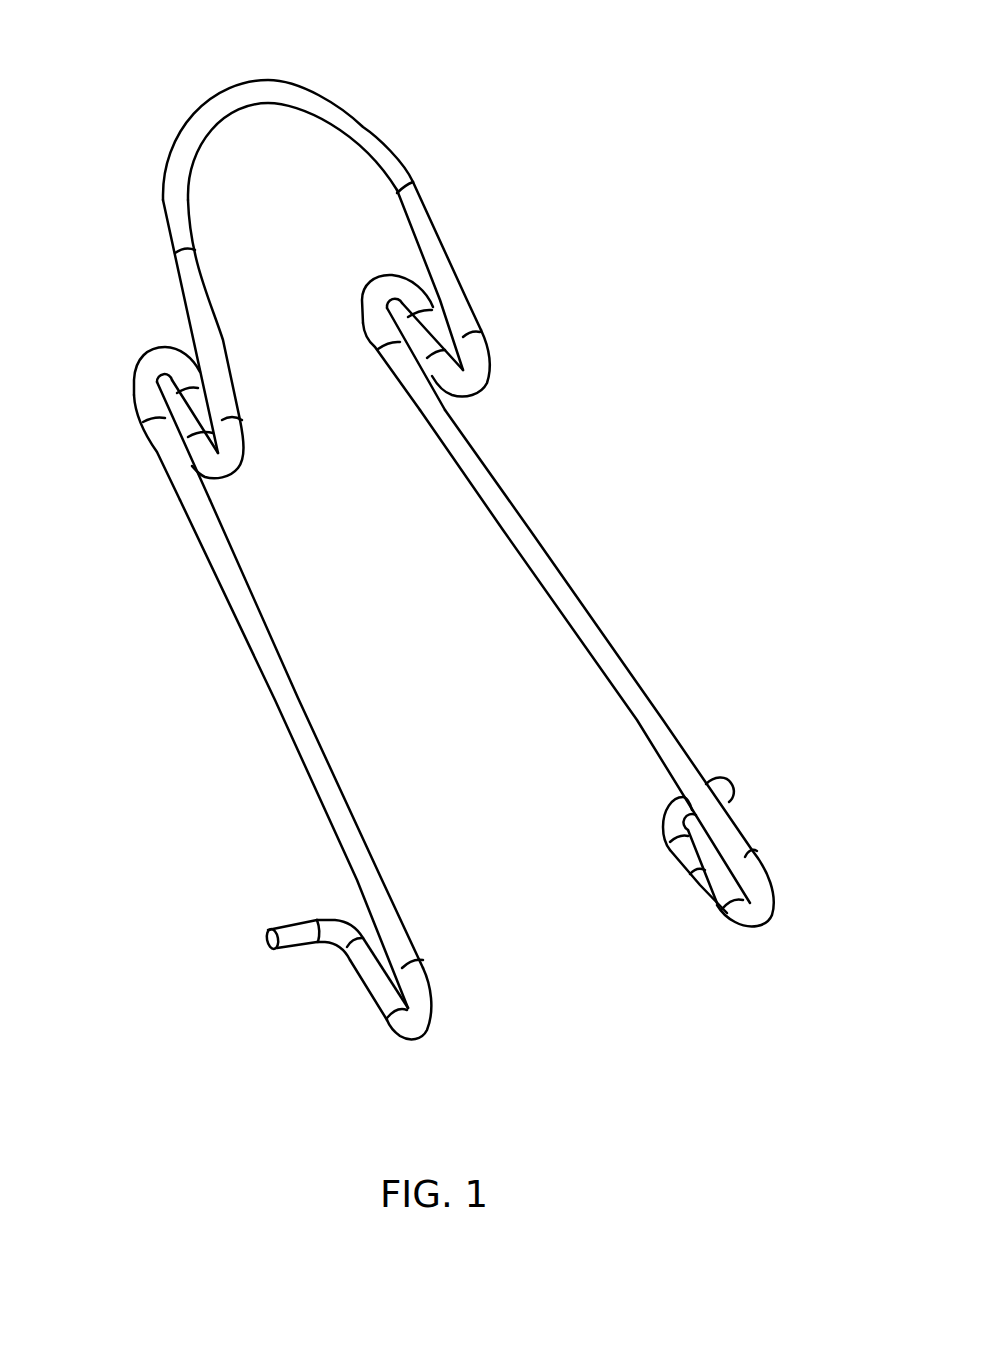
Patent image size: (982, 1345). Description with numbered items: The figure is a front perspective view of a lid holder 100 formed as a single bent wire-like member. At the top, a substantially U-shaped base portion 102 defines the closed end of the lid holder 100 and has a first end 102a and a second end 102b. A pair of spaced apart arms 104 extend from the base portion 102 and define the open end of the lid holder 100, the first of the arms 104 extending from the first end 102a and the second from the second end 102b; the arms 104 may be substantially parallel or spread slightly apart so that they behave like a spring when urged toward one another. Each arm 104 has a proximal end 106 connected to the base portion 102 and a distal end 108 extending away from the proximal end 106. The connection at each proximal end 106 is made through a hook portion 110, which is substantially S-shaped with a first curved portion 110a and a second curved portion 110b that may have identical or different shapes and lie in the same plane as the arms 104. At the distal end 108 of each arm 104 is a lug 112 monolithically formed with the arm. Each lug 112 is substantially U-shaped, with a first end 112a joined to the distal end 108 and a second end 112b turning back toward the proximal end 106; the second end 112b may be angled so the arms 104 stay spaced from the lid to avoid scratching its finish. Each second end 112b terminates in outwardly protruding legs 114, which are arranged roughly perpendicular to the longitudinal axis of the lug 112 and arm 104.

The lid holder 100 is at (726, 230).
The base portion 102 is at (267, 88).
The first end of the base portion 102a is at (230, 398).
The second end of the base portion 102b is at (465, 313).
The spaced apart arms 104 is at (282, 677).
The proximal end of the arm 106 is at (157, 436).
The distal end of the arm 108 is at (405, 943).
The hook portion 110 is at (503, 367).
The first curved portion 110a is at (227, 463).
The second curved portion 110b is at (148, 365).
The lug 112 is at (373, 977).
The first end of the lug 112a is at (418, 987).
The second end of the lug 112b is at (338, 933).
The outwardly protruding legs 114 is at (290, 940).